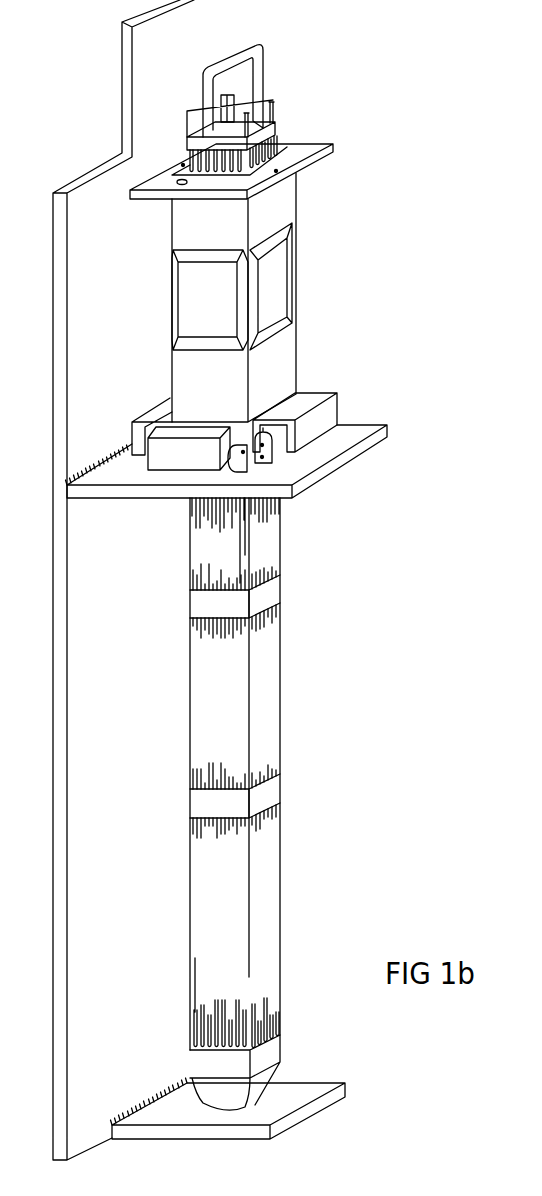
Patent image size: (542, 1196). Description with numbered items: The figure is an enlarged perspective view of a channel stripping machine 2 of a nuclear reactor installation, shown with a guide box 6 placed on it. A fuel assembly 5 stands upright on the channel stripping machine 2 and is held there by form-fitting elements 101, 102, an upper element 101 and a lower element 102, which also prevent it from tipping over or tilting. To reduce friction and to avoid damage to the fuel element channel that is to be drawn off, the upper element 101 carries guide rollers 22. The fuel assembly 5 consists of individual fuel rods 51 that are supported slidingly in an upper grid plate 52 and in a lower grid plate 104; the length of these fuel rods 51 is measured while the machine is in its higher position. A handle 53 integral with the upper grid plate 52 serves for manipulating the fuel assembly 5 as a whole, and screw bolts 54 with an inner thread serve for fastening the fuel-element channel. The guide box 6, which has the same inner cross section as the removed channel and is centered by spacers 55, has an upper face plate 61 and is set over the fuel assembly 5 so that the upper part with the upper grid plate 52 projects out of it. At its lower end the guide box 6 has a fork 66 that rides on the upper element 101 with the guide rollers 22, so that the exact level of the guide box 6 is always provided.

The channel stripping machine 2 is at (62, 983).
The fuel assembly 5 is at (282, 727).
The guide box 6 is at (287, 362).
The guide rollers 22 is at (263, 463).
The fuel rods 51 is at (273, 547).
The upper grid plate 52 is at (265, 132).
The handle 53 is at (265, 55).
The screw bolts 54 is at (272, 102).
The spacers 55 is at (202, 603).
The upper face plate 61 is at (303, 163).
The fork 66 is at (332, 412).
The upper form-fitting element 101 is at (357, 453).
The lower form-fitting element 102 is at (307, 1113).
The lower grid plate 104 is at (270, 1050).